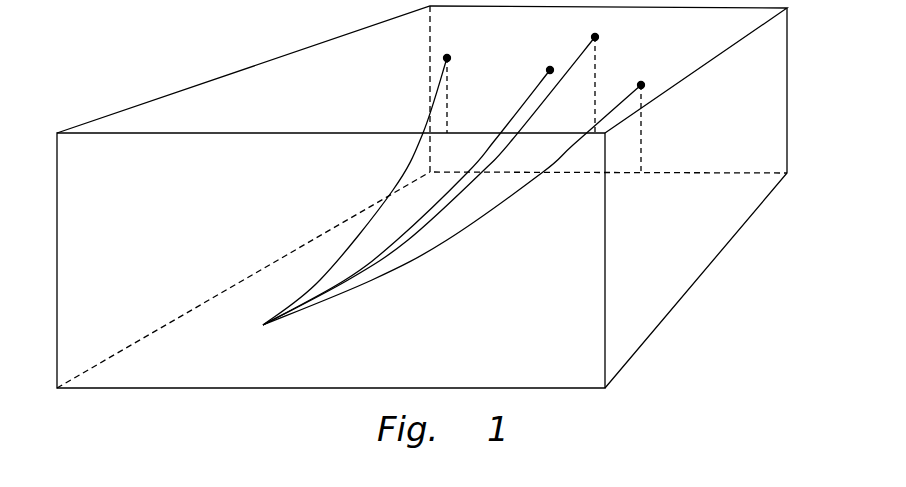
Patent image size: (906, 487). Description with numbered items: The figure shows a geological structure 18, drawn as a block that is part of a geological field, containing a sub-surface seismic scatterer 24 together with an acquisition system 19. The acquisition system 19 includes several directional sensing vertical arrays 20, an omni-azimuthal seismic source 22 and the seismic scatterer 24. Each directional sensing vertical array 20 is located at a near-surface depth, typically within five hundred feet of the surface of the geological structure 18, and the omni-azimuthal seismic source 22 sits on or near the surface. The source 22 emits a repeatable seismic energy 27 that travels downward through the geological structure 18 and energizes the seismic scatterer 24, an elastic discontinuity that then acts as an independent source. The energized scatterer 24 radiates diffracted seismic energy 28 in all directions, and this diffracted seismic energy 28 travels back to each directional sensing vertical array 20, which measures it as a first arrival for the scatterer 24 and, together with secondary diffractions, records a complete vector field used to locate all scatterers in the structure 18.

The geological structure 18 is at (692, 286).
The acquisition system 19 is at (755, 262).
The directional sensing vertical array 20 is at (447, 87).
The omni-azimuthal seismic source 22 is at (546, 67).
The seismic scatterer 24 is at (262, 326).
The seismic energy 27 is at (512, 123).
The diffracted seismic energy 28 is at (395, 182).